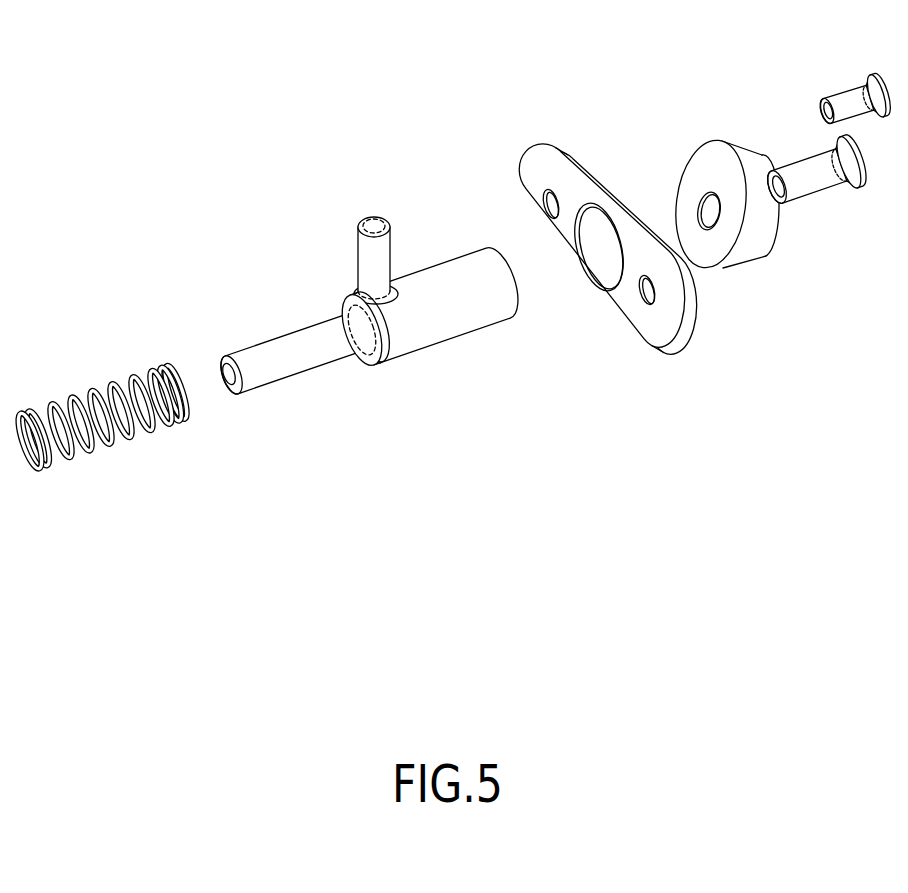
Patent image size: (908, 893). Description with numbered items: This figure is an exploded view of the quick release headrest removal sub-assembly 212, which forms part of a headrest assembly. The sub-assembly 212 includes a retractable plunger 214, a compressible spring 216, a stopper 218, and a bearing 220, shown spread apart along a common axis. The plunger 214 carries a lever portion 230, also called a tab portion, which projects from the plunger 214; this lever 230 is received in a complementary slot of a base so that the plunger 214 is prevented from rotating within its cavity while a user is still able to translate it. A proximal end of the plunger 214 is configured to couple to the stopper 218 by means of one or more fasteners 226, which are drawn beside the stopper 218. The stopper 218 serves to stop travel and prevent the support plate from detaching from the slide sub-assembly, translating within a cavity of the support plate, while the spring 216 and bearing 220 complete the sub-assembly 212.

The quick release headrest removal sub-assembly 212 is at (176, 58).
The retractable plunger 214 is at (366, 303).
The compressible spring 216 is at (107, 447).
The stopper 218 is at (720, 150).
The bearing 220 is at (664, 345).
The fasteners 226 is at (808, 187).
The lever portion 230 is at (370, 260).